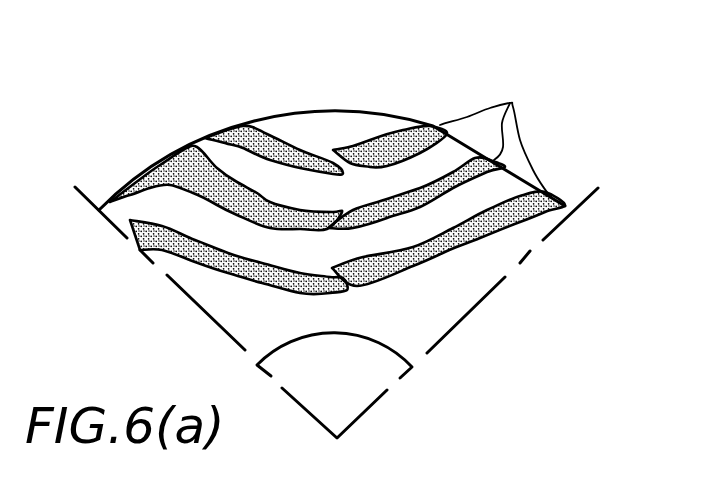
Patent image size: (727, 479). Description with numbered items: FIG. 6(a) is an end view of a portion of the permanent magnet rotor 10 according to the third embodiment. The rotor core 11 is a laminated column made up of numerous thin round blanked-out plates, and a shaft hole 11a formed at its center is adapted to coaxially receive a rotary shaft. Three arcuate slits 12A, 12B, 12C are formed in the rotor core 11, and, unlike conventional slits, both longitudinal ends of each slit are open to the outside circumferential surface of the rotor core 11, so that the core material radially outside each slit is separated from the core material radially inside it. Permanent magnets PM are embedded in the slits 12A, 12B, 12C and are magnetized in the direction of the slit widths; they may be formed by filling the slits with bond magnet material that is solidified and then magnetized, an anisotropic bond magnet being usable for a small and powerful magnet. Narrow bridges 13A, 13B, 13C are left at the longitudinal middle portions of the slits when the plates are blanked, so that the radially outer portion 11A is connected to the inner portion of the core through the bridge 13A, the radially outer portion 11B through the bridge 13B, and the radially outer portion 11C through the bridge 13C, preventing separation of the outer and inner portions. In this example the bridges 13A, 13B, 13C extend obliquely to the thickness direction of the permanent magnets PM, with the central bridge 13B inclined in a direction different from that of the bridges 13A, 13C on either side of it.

The permanent magnet rotor 10 is at (572, 138).
The rotor core 11 is at (450, 306).
The shaft hole 11a is at (293, 347).
The radially outer portion 11A is at (372, 127).
The radially outer portion 11B is at (413, 178).
The radially outer portion 11C is at (465, 212).
The slit 12A is at (253, 127).
The slit 12B is at (197, 180).
The slit 12C is at (138, 200).
The bridge 13A is at (345, 145).
The bridge 13B is at (330, 228).
The bridge 13C is at (395, 283).
The permanent magnet PM is at (496, 138).